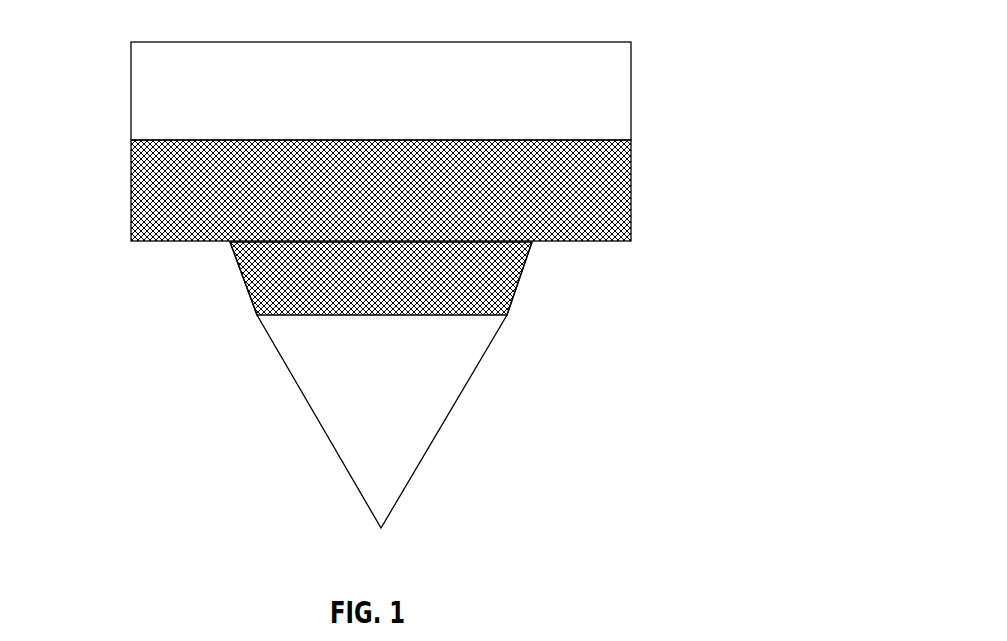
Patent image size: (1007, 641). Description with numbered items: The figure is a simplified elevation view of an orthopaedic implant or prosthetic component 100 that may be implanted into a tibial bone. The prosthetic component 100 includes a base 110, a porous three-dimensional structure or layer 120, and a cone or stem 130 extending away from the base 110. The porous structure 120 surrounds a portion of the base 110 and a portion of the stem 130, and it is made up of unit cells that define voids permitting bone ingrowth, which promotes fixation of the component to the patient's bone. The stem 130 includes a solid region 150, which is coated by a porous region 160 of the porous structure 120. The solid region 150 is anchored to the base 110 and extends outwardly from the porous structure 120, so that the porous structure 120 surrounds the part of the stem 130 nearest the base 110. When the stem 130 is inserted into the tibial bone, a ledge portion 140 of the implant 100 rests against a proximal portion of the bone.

The prosthetic component 100 is at (716, 26).
The base 110 is at (131, 92).
The porous three-dimensional structure 120 is at (631, 192).
The stem 130 is at (378, 385).
The ledge portion 140 is at (213, 243).
The solid region 150 is at (450, 408).
The porous region 160 is at (250, 308).